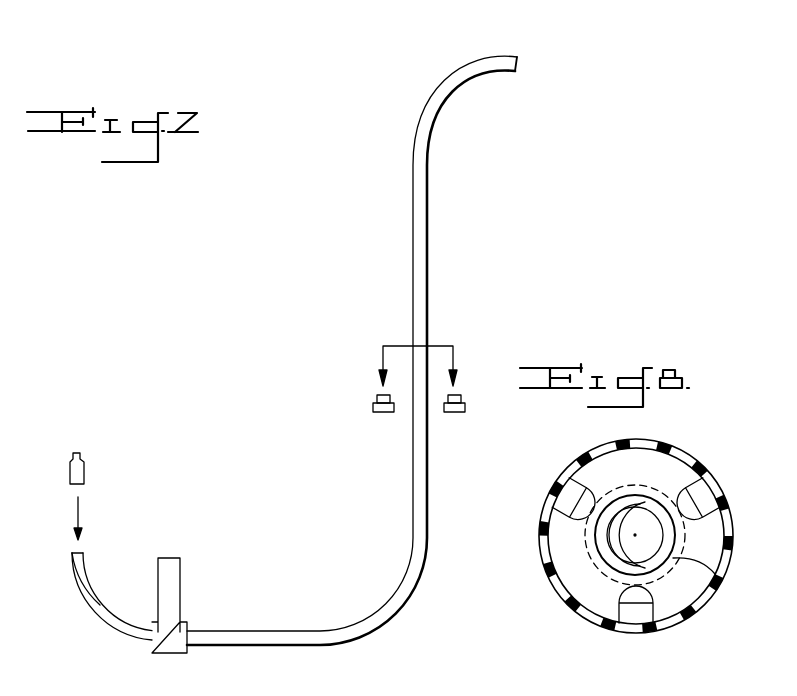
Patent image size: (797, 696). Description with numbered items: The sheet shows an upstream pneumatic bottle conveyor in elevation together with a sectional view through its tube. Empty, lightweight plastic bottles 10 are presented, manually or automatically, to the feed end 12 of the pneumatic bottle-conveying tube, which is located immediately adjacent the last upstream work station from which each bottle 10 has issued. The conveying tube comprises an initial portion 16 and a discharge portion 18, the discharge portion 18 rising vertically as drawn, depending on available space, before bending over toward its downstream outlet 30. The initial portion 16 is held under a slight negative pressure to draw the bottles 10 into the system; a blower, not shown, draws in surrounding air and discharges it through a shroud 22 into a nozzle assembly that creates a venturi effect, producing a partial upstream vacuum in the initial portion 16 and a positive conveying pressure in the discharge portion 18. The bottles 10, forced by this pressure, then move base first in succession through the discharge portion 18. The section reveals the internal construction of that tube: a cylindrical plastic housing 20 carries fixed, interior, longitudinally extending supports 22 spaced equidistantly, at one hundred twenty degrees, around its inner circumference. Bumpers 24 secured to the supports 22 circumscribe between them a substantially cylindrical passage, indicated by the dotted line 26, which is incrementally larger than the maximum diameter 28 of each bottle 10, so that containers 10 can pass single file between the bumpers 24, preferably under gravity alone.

In FIG. 7, the bottle 10 is at (113, 449).
In FIG. 8, the bottle 10 is at (623, 550).
In FIG. 7, the feed end 12 is at (85, 565).
In FIG. 7, the initial portion 16 is at (117, 612).
In FIG. 7, the discharge portion 18 is at (427, 215).
In FIG. 8, the cylindrical plastic housing 20 is at (688, 452).
In FIG. 7, the support 22 is at (183, 588).
In FIG. 8, the support 22 is at (568, 498).
In FIG. 8, the bumper 24 is at (586, 500).
In FIG. 8, the cylindrical passage 26 is at (636, 487).
In FIG. 8, the maximum diameter 28 is at (715, 574).
In FIG. 7, the outlet end 30 is at (517, 60).